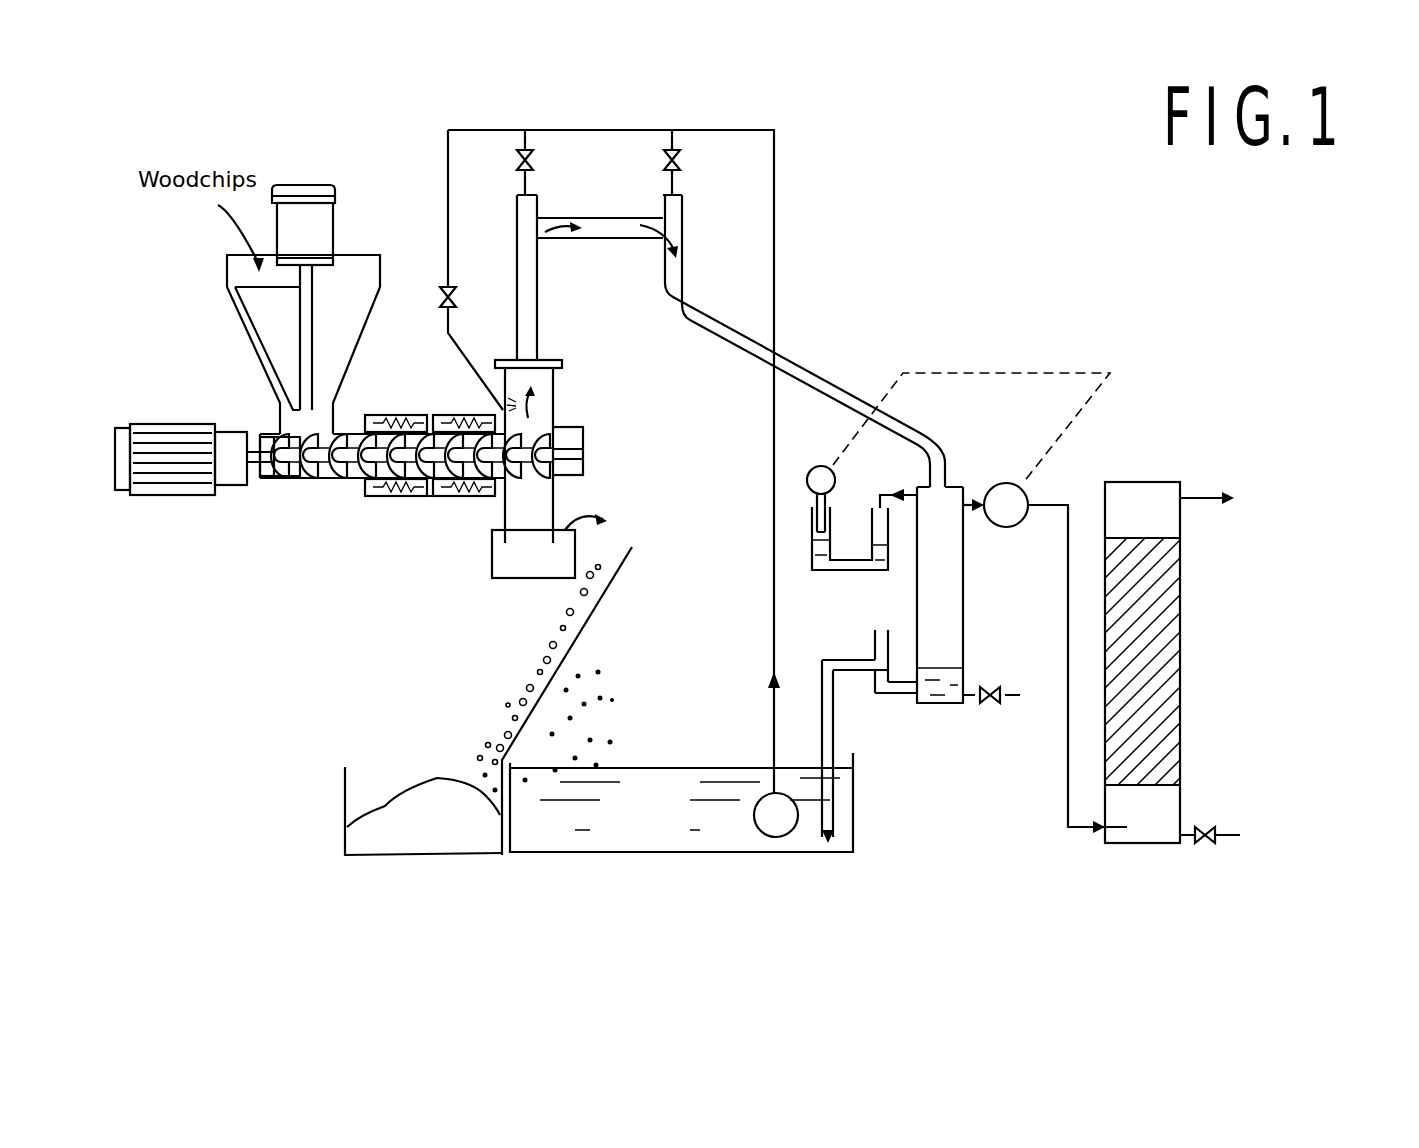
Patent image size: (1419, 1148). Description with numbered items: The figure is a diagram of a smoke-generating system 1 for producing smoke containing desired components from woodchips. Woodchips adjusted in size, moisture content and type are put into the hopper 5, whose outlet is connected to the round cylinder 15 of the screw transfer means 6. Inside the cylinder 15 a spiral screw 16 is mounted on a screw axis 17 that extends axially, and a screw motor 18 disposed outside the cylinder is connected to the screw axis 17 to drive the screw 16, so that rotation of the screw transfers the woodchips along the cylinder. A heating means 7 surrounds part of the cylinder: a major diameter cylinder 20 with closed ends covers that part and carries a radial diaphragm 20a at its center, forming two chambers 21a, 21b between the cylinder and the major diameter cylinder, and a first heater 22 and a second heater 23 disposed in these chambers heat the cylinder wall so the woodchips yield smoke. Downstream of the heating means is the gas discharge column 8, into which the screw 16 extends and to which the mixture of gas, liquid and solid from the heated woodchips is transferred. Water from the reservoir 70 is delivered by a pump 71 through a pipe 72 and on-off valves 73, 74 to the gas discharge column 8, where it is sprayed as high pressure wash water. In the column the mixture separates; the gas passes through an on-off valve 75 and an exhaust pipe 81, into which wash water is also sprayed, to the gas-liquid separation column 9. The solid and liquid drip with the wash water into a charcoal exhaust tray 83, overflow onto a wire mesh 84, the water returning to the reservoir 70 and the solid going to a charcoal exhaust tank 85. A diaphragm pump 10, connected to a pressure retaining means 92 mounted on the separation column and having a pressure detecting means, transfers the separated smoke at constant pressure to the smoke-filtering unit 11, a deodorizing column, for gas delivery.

The smoke-generating system 1 is at (955, 188).
The hopper 5 is at (226, 267).
The screw transfer means 6 is at (326, 492).
The heating means 7 is at (427, 512).
The gas discharge column 8 is at (556, 386).
The gas-liquid separation column 9 is at (963, 603).
The diaphragm pump 10 is at (1005, 483).
The smoke-filtering unit 11 is at (1182, 635).
The round cylinder 15 is at (348, 483).
The spiral screw 16 is at (297, 483).
The screw axis 17 is at (265, 483).
The screw motor 18 is at (135, 497).
The major diameter cylinder 20 is at (382, 412).
The radial diaphragm 20a is at (428, 412).
The chamber 21a is at (377, 497).
The chamber 21b is at (437, 497).
The first heater 22 is at (403, 497).
The second heater 23 is at (463, 498).
The reservoir 70 is at (672, 852).
The pump 71 is at (781, 838).
The pipe 72 is at (775, 197).
The on-off valve 73 is at (455, 290).
The on-off valve 74 is at (537, 157).
The on-off valve 75 is at (684, 157).
The exhaust pipe 81 is at (714, 313).
The charcoal exhaust tray 83 is at (527, 578).
The wire mesh 84 is at (624, 568).
The charcoal exhaust tank 85 is at (345, 790).
The pressure retaining means 92 is at (850, 572).